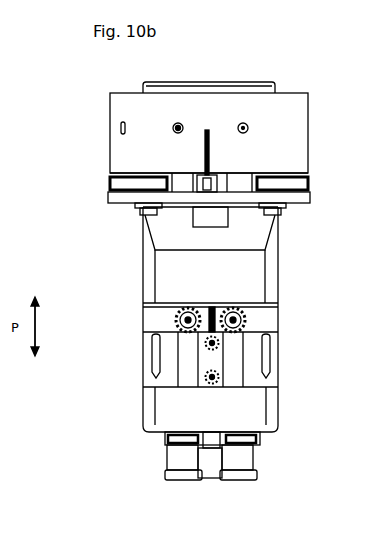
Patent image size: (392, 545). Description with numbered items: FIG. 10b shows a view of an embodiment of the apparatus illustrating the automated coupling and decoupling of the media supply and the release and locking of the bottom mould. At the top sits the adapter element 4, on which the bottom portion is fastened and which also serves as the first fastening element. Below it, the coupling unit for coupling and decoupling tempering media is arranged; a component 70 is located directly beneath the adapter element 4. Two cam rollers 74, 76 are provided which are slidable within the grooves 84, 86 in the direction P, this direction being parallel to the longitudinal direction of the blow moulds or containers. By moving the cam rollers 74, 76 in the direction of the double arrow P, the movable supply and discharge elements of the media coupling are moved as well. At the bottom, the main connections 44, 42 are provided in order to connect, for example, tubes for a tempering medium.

The adapter element 4 is at (282, 133).
The coupling block 70 is at (212, 218).
The cam roller 74 is at (145, 312).
The cam roller 76 is at (252, 312).
The groove 84 is at (192, 372).
The groove 86 is at (232, 365).
The main connection 44 is at (182, 475).
The main connection 42 is at (243, 475).